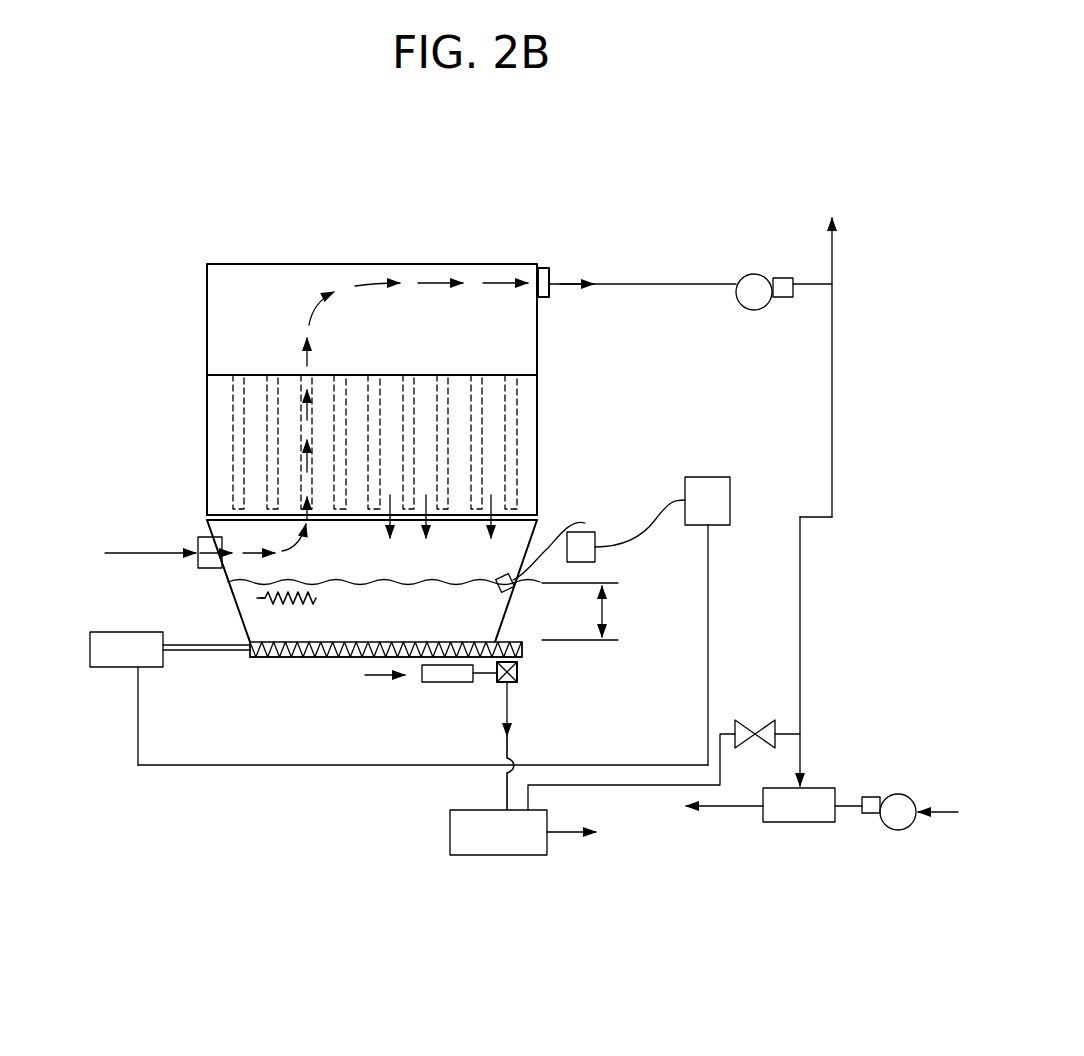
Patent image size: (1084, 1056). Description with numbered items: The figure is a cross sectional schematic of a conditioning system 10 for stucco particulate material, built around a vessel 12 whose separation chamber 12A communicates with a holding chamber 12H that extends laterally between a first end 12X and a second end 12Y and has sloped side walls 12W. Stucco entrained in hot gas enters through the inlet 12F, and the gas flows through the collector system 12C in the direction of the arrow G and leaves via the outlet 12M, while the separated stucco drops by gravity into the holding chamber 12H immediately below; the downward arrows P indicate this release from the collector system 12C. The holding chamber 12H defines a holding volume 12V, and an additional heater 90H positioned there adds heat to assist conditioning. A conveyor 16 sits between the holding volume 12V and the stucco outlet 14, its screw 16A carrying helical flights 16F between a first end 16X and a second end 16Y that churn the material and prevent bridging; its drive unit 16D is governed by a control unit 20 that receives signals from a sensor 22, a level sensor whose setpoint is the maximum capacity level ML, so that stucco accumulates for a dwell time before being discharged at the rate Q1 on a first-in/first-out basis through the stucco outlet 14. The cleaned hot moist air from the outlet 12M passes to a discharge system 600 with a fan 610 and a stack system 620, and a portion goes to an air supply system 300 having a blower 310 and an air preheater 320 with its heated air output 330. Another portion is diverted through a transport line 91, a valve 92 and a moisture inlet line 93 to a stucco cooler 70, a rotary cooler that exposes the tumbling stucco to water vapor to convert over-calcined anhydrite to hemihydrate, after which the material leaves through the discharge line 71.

The conditioning system 10 is at (690, 256).
The vessel 12 is at (146, 328).
The separation chamber 12A is at (195, 264).
The collector system 12C is at (522, 427).
The inlet 12F is at (197, 546).
The holding chamber 12H is at (195, 642).
The sloped side walls 12W is at (236, 592).
The holding volume 12V is at (268, 609).
The first end 12X is at (268, 628).
The second end 12Y is at (472, 632).
The outlet 12M is at (552, 297).
The stucco outlet 14 is at (517, 684).
The conveyor 16 is at (313, 658).
The screw 16A is at (348, 658).
The drive unit 16D is at (108, 660).
The helical flights 16F is at (268, 658).
The first end 16X is at (250, 660).
The second end 16Y is at (527, 653).
The control unit 20 is at (725, 492).
The sensor 22 is at (492, 567).
The stucco cooler 70 is at (450, 832).
The discharge line 71 is at (570, 838).
The additional heater 90H is at (304, 606).
The transport line 91 is at (790, 730).
The valve 92 is at (755, 726).
The moisture inlet line 93 is at (612, 786).
The air supply system 300 is at (918, 832).
The blower 310 is at (905, 796).
The air preheater 320 is at (818, 797).
The supply outlet 330 is at (722, 812).
The discharge system 600 is at (868, 207).
The fan 610 is at (752, 286).
The stack system 620 is at (842, 268).
The arrow G is at (368, 283).
The pressure P is at (388, 542).
The maximum capacity level ML is at (447, 584).
The flow rate Q1 is at (380, 680).